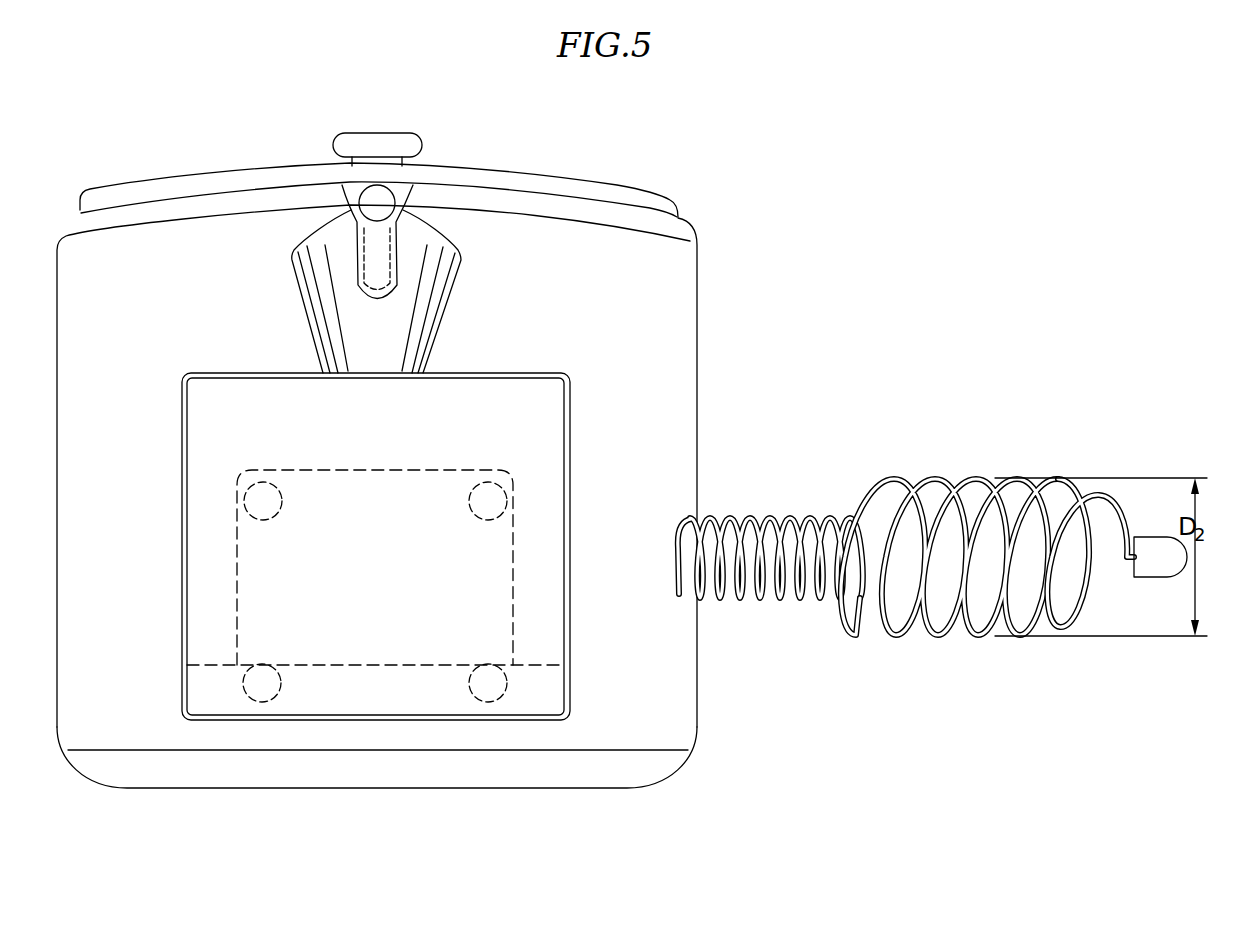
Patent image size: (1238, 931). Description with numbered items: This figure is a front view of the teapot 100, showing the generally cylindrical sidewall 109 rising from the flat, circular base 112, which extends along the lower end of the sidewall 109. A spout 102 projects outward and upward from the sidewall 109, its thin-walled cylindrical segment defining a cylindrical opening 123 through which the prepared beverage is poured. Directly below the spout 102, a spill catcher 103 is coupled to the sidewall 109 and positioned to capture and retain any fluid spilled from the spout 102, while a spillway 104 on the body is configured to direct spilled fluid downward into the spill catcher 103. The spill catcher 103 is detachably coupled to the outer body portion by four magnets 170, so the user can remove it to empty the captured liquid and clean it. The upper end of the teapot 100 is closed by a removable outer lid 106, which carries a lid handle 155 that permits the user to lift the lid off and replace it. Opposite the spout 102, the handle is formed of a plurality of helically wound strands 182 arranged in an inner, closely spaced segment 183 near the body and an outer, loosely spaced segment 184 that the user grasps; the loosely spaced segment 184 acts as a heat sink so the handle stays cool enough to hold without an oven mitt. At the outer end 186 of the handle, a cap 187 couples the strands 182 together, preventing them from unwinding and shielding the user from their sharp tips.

The teapot 100 is at (728, 148).
The spout 102 is at (352, 214).
The spill catcher 103 is at (567, 412).
The spillway 104 is at (424, 319).
The removable outer lid 106 is at (493, 180).
The sidewall 109 is at (182, 309).
The base 112 is at (518, 777).
The cylindrical opening 123 is at (374, 203).
The lid handle 155 is at (425, 128).
The magnets 170 is at (485, 503).
The helically wound strands 182 is at (892, 628).
The inner, closely spaced segment 183 is at (860, 602).
The outer, loosely spaced segment 184 is at (1125, 712).
The outer end 186 is at (1132, 605).
The cap 187 is at (1163, 578).